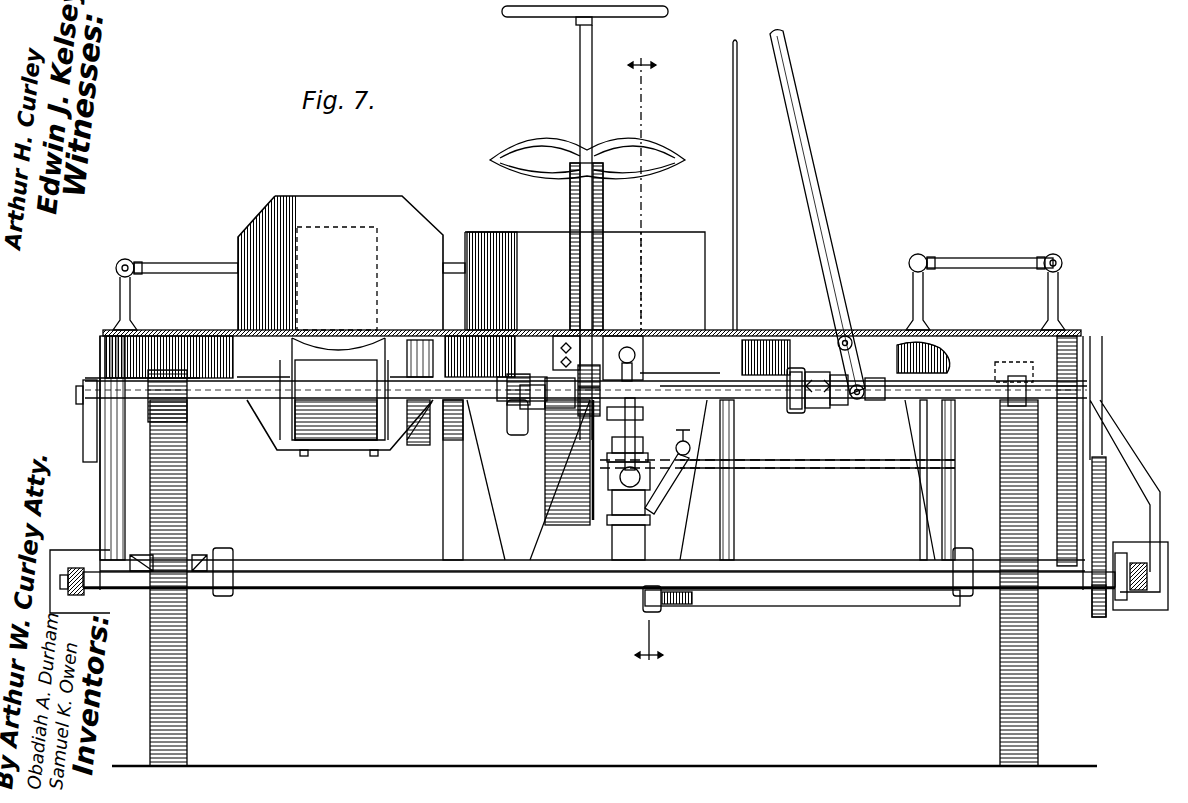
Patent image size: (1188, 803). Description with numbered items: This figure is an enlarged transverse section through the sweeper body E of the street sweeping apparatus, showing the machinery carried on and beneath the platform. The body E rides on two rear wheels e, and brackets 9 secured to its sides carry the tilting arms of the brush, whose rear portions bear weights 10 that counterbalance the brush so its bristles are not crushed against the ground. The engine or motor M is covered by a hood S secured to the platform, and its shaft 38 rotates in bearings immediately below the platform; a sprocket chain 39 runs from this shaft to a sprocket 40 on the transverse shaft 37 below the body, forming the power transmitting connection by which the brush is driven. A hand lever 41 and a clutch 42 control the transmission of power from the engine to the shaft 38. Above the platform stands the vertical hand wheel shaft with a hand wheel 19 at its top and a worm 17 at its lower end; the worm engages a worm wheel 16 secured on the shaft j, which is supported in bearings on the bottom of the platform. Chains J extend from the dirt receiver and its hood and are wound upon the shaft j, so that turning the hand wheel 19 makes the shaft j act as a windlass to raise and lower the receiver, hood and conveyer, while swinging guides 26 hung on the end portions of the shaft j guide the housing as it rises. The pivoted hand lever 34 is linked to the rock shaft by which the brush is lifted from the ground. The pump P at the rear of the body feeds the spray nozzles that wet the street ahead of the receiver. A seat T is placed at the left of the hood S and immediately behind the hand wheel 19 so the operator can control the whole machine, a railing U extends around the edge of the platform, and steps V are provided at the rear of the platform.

The hand wheel 19 is at (560, 18).
The weights 10 is at (1152, 645).
The seat T is at (520, 143).
The hood S is at (338, 200).
The railing U is at (162, 268).
The hand lever 34 is at (739, 203).
The hand lever 41 is at (820, 168).
The clutch 42 is at (800, 366).
The body E is at (870, 330).
The chains J is at (173, 400).
The shaft j is at (962, 400).
The swinging guides 26 is at (84, 442).
The brackets 9 is at (103, 498).
The worm 17 is at (594, 378).
The worm wheel 16 is at (578, 406).
The pump P is at (630, 500).
The motor M is at (258, 446).
The shaft 38 is at (902, 388).
The sprocket chain 39 is at (1106, 522).
The sprocket 40 is at (1097, 617).
The transverse shaft 37 is at (383, 584).
The steps V is at (884, 606).
The bearing a is at (85, 610).
The rear wheels e is at (188, 702).